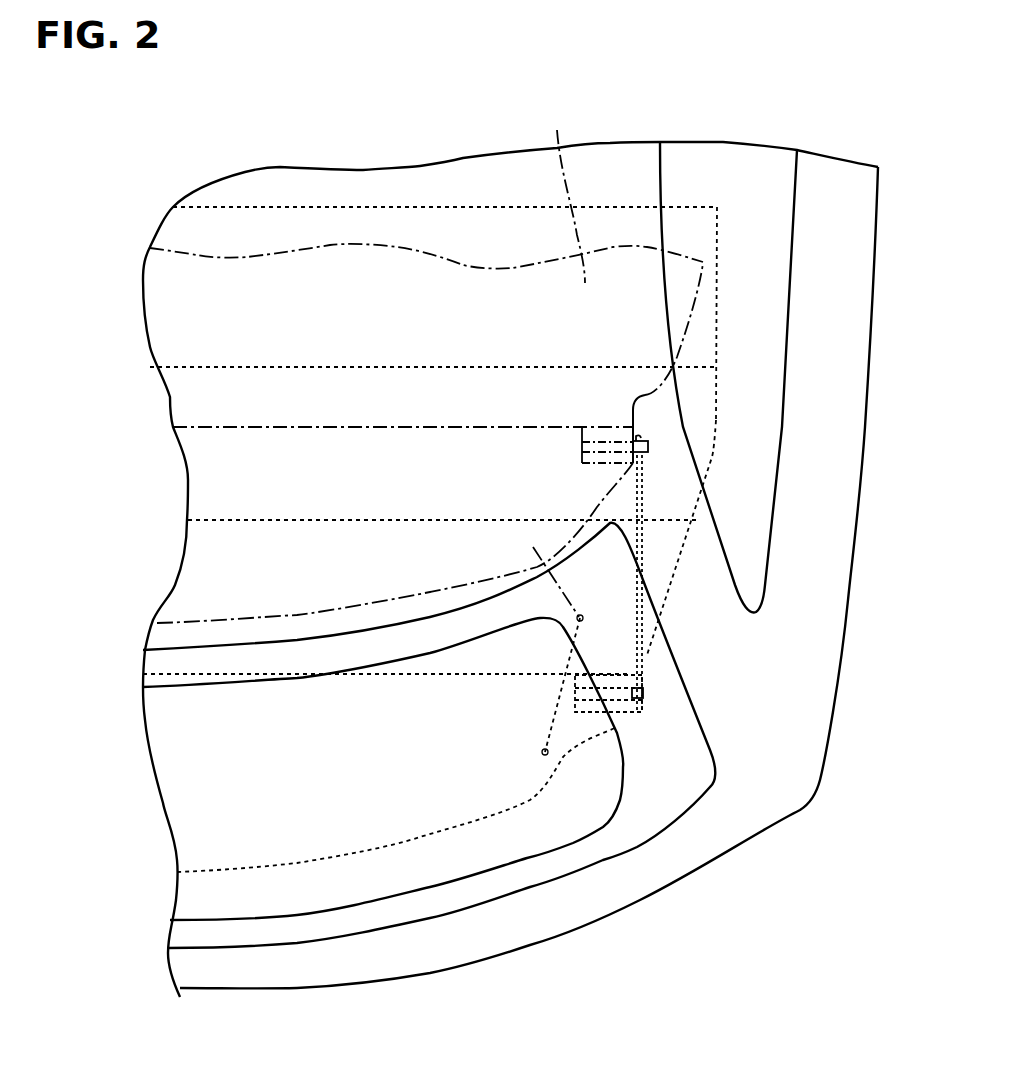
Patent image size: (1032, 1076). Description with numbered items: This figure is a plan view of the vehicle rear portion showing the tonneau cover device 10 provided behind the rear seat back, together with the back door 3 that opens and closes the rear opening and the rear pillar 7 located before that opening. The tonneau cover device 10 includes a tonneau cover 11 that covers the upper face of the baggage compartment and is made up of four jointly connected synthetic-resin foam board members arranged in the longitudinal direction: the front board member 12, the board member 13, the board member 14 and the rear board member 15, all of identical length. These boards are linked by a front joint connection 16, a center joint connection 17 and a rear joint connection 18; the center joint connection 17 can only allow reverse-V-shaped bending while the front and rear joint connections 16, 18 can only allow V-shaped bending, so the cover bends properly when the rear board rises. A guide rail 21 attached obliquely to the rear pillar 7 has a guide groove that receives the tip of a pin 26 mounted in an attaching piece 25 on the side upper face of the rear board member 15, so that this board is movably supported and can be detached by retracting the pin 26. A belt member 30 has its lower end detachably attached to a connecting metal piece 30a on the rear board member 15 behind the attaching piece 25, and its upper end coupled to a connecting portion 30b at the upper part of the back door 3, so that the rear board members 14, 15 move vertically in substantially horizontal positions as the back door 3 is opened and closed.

The back door 3 is at (683, 775).
The rear pillar 7 is at (712, 623).
The tonneau cover device 10 is at (636, 752).
The tonneau cover 11 is at (695, 207).
The front board member 12 is at (477, 228).
The board member 13 is at (332, 508).
The board member 14 is at (450, 690).
The rear board member 15 is at (483, 442).
The front joint connection 16 is at (288, 363).
The center joint connection 17 is at (247, 518).
The rear joint connection 18 is at (392, 677).
The guide rail 21 is at (645, 488).
The attaching piece 25 is at (607, 432).
The pin 26 is at (648, 447).
The belt member 30 is at (578, 616).
The connecting metal piece 30a is at (542, 754).
The connecting portion 30b is at (573, 625).